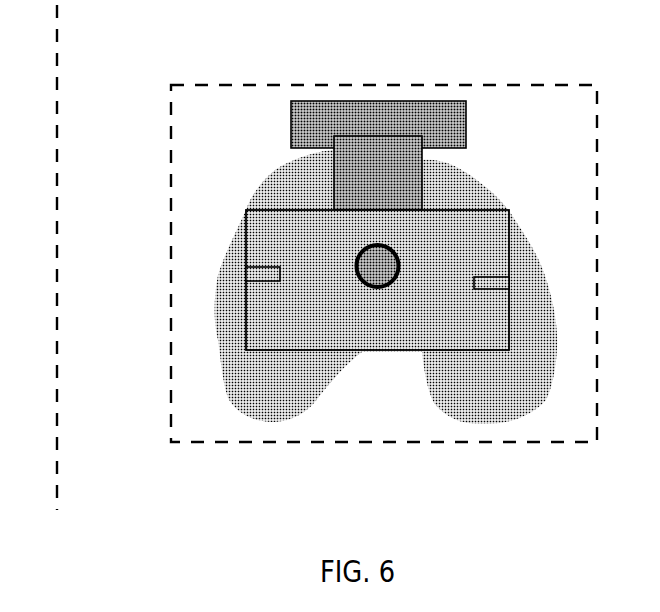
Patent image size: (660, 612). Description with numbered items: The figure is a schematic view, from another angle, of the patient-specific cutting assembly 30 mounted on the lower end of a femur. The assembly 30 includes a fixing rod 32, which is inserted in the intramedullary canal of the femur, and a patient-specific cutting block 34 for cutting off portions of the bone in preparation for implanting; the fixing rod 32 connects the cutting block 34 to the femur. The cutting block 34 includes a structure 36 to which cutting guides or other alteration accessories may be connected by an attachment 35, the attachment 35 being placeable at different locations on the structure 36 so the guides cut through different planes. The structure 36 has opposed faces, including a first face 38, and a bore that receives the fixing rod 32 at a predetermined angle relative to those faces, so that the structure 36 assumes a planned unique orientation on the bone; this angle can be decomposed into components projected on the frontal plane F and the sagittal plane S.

The patient-specific cutting assembly 30 is at (363, 267).
The fixing rod 32 is at (364, 288).
The patient-specific cutting block 34 is at (447, 250).
The attachment 35 is at (402, 177).
The structure 36 is at (445, 323).
The first face 38 is at (280, 323).
The frontal plane F is at (386, 267).
The sagittal plane S is at (72, 264).